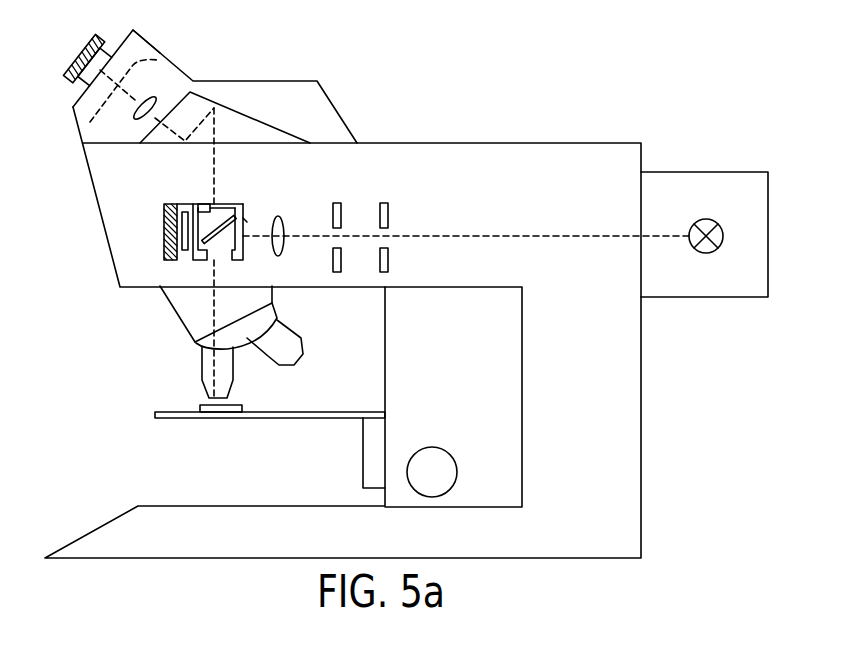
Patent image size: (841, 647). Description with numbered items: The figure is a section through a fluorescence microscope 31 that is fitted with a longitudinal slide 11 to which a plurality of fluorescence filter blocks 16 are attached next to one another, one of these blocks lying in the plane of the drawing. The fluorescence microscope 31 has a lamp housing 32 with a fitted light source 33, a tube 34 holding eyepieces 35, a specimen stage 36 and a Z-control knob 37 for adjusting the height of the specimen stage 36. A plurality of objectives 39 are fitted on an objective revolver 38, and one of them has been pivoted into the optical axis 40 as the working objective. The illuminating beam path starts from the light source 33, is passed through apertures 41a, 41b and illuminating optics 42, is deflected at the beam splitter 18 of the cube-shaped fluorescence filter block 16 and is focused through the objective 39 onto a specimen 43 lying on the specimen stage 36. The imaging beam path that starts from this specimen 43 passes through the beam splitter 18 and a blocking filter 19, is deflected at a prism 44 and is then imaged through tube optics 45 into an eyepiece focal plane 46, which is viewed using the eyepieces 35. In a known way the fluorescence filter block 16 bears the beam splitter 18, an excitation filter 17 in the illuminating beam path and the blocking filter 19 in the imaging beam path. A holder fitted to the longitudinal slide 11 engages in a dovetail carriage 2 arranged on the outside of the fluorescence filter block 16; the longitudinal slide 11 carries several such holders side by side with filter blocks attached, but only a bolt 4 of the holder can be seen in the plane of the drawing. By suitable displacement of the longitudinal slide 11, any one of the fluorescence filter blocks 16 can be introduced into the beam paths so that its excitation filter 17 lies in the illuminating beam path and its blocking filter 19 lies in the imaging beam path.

The dovetail carriage 2 is at (188, 212).
The bolt 4 is at (183, 228).
The longitudinal slide 11 is at (167, 238).
The fluorescence filter block 16 is at (240, 204).
The excitation filter 17 is at (247, 222).
The beam splitter 18 is at (214, 240).
The blocking filter 19 is at (209, 203).
The fluorescence microscope 31 is at (628, 500).
The lamp housing 32 is at (658, 287).
The light source 33 is at (705, 250).
The tube 34 is at (92, 130).
The eyepieces 35 is at (86, 86).
The specimen stage 36 is at (163, 419).
The Z-control knob 37 is at (446, 472).
The objective revolver 38 is at (200, 345).
The objectives 39 is at (207, 377).
The optical axis 40 is at (516, 234).
The aperture 41a is at (385, 203).
The aperture 41b is at (337, 203).
The illuminating optics 42 is at (283, 243).
The specimen 43 is at (200, 407).
The prism 44 is at (238, 116).
The tube optics 45 is at (144, 99).
The eyepiece focal plane 46 is at (160, 52).